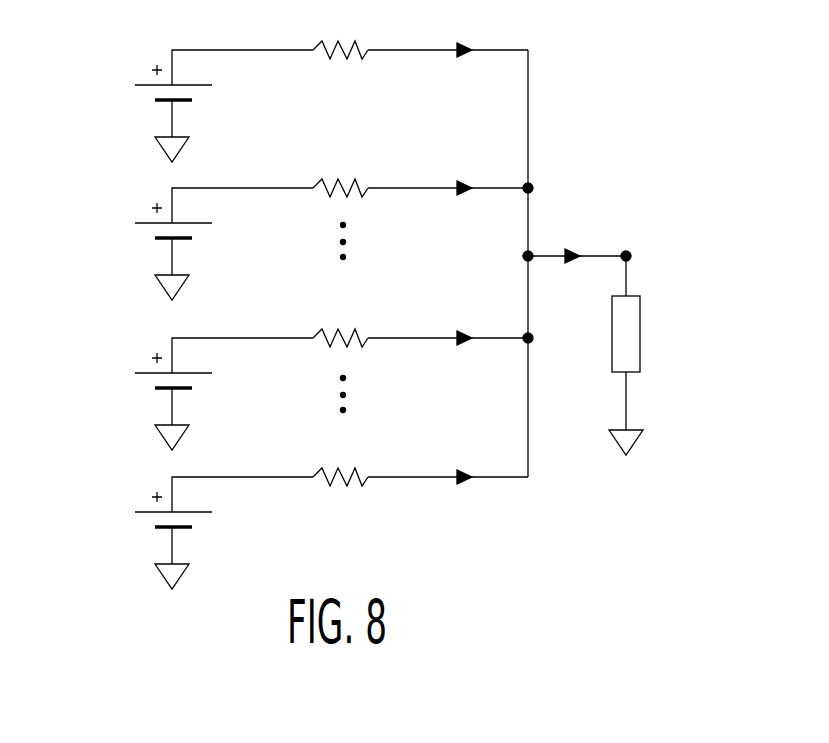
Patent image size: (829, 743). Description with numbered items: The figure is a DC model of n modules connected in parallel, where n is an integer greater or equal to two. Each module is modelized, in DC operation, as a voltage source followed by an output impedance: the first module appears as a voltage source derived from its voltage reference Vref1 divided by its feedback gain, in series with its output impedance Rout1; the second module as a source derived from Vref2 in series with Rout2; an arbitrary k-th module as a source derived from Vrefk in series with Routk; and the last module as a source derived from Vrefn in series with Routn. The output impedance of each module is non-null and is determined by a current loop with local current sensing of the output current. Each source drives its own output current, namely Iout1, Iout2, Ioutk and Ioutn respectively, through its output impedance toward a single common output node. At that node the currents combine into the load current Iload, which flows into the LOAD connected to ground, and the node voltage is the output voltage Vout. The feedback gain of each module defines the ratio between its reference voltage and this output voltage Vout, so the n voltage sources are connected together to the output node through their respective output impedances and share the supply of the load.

The voltage reference of the first module Vref1 is at (174, 106).
The voltage reference of the second module Vref2 is at (174, 244).
The voltage reference of the k-th module Vrefk is at (174, 394).
The voltage reference of the n-th module Vrefn is at (174, 533).
The output impedance of the first module Rout1 is at (340, 32).
The output impedance of the second module Rout2 is at (340, 170).
The output impedance of the k-th module Routk is at (340, 320).
The output impedance of the n-th module Routn is at (340, 459).
The output current of the first module Iout1 is at (448, 31).
The output current of the second module Iout2 is at (448, 169).
The output current of the k-th module Ioutk is at (448, 319).
The output current of the n-th module Ioutn is at (448, 458).
The load current Iload is at (577, 238).
The output voltage Vout is at (646, 243).
The load LOAD is at (656, 355).